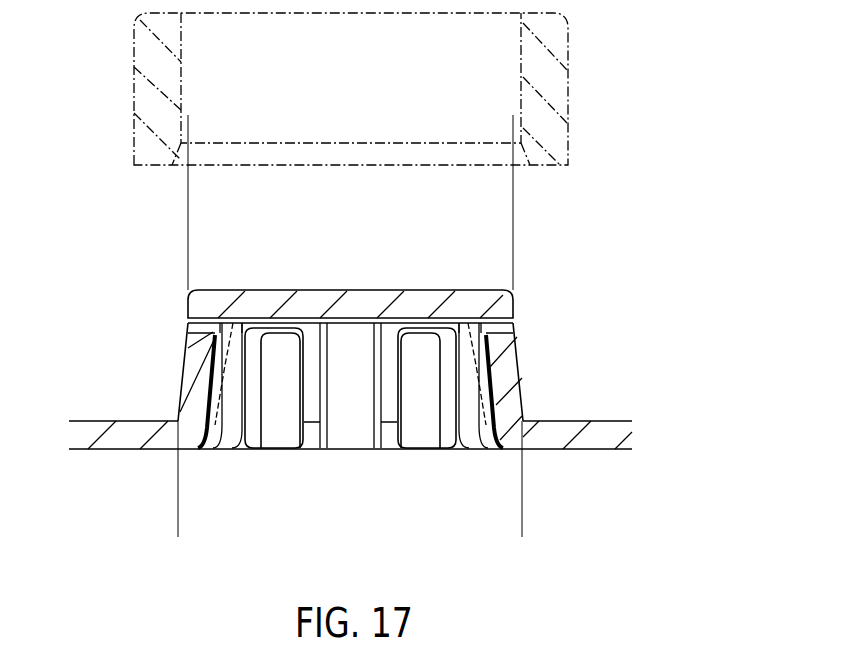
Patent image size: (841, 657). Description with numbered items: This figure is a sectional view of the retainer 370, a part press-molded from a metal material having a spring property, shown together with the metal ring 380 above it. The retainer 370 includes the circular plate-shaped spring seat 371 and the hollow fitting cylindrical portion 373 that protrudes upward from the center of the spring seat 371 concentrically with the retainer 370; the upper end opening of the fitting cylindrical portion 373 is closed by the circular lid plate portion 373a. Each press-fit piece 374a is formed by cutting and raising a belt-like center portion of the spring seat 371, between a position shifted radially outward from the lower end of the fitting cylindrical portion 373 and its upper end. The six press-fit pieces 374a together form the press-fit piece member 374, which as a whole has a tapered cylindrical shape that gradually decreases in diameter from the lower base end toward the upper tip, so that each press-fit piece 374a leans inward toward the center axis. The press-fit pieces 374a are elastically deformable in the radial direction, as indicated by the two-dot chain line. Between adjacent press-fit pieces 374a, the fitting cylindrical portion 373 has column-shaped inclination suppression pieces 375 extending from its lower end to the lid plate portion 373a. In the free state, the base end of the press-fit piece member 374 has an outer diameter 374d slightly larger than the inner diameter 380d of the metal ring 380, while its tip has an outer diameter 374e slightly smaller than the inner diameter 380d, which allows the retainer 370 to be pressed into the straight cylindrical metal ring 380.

The metal ring 380 is at (558, 86).
The inner diameter of the metal ring 380d is at (521, 70).
The outer diameter of the tip portion of the press-fit piece member 374e is at (513, 125).
The fitting cylindrical portion 373 is at (465, 290).
The lid plate portion 373a is at (313, 307).
The inclination suppression piece 375 is at (233, 340).
The press-fit piece member 374 is at (527, 324).
The press-fit piece 374a is at (288, 355).
The outer diameter of the base end portion of the press-fit piece member 374d is at (522, 527).
The retainer 370 is at (607, 421).
The spring seat 371 is at (617, 441).